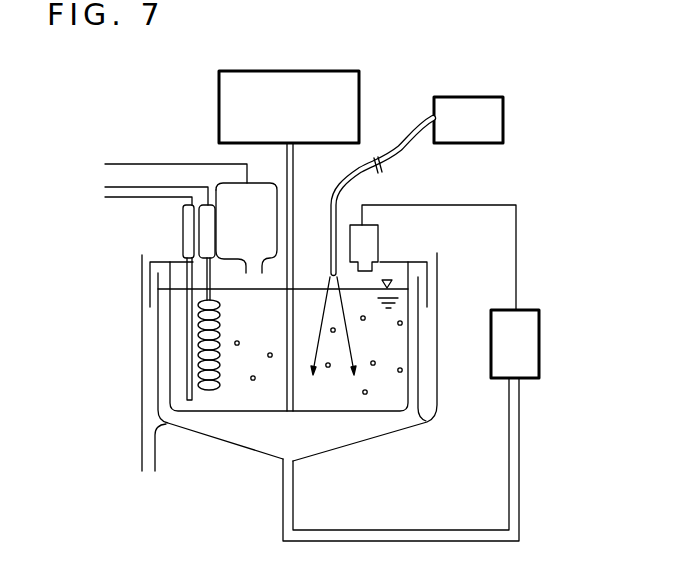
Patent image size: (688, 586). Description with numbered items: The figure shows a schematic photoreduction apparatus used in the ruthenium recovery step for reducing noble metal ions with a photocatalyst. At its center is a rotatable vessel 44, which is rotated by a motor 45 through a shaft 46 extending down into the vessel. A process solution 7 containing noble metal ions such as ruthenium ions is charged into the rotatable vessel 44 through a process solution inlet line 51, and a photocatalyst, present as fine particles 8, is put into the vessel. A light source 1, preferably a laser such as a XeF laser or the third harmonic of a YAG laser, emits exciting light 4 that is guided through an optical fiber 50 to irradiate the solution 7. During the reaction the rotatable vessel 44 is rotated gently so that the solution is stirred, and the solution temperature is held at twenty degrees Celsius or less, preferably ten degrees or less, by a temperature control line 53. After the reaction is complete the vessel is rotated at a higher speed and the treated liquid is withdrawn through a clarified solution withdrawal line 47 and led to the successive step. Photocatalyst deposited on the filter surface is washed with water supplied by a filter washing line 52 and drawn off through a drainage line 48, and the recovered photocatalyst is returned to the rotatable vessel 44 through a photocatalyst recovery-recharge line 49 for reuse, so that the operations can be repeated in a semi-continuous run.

The light source 1 is at (504, 122).
The exciting light 4 is at (348, 337).
The solution 7 is at (397, 395).
The fine particles 8 is at (403, 323).
The rotatable vessel 44 is at (265, 411).
The motor 45 is at (218, 97).
The shaft 46 is at (295, 389).
The clarified solution withdrawal line 47 is at (145, 420).
The drainage line 48 is at (394, 529).
The photocatalyst recovery-recharge line 49 is at (516, 245).
The optical fiber 50 is at (407, 152).
The process solution inlet line 51 is at (164, 164).
The filter washing line 52 is at (133, 198).
The temperature control line 53 is at (117, 187).